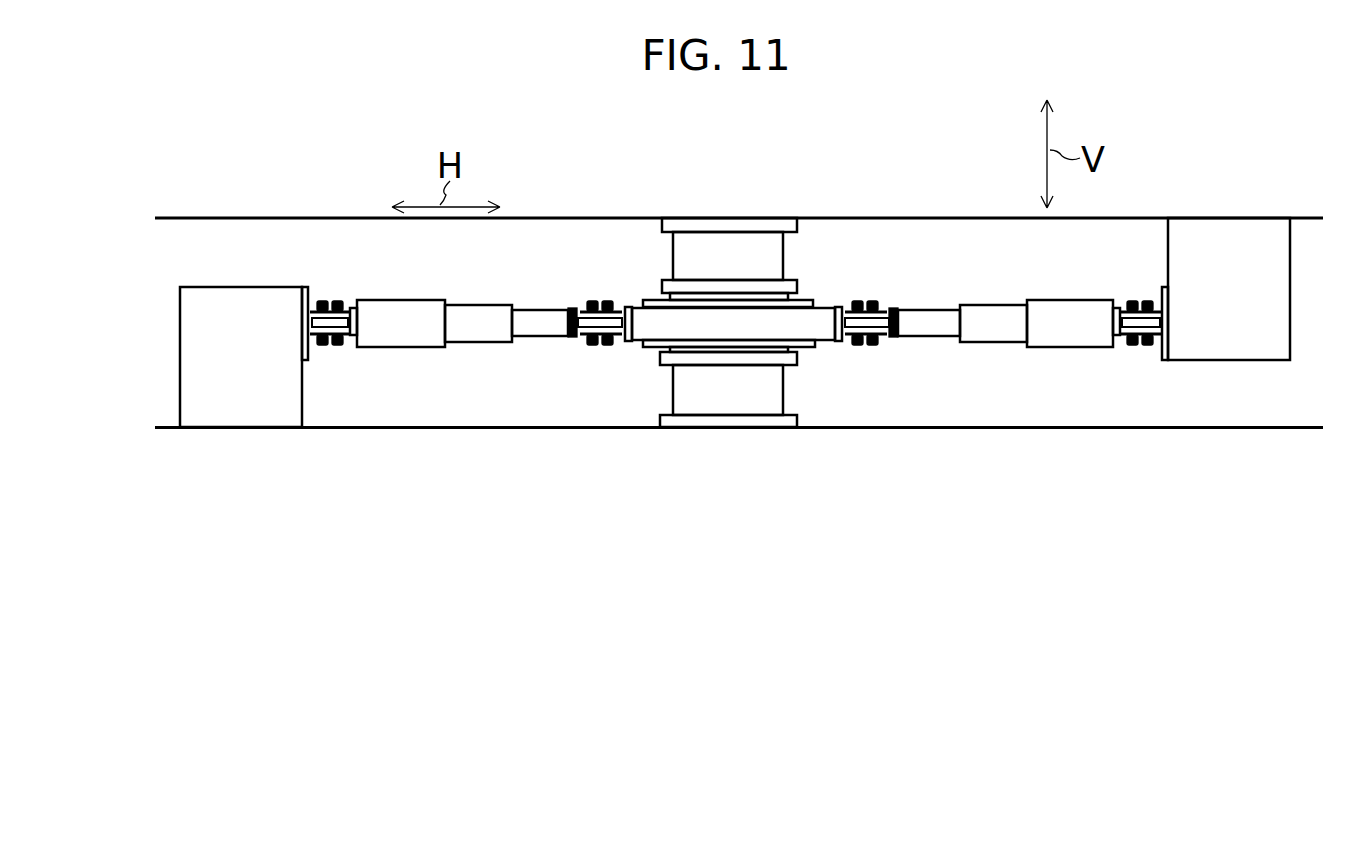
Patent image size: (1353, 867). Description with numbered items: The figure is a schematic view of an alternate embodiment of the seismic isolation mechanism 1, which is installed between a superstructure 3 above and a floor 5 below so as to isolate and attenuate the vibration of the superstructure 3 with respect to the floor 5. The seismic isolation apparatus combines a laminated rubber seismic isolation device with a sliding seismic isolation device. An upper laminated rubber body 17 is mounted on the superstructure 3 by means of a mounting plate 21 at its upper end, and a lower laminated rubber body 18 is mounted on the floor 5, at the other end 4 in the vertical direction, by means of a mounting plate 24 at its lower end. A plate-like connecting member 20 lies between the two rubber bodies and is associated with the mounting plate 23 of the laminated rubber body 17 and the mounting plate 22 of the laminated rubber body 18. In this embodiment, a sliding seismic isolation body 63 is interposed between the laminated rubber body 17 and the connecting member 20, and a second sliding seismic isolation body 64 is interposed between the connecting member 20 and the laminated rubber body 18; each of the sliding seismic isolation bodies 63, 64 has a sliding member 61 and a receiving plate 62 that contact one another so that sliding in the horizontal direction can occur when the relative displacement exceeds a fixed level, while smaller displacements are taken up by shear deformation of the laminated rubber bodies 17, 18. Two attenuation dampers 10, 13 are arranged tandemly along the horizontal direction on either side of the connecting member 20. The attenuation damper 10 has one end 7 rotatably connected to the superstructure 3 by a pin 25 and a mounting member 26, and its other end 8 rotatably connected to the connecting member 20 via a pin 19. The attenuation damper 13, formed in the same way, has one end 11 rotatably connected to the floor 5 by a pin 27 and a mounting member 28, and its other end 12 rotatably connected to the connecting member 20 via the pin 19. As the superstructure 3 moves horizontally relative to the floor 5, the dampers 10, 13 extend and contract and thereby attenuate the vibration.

The seismic isolation mechanism 1 is at (553, 206).
The superstructure 3 is at (550, 219).
The other end in the vertical direction 4 is at (1010, 498).
The floor 5 is at (457, 426).
The one end of attenuation damper 10 7 is at (1135, 302).
The other end of attenuation damper 10 8 is at (883, 337).
The attenuation damper 10 is at (1022, 294).
The one end of attenuation damper 13 11 is at (330, 300).
The other end of attenuation damper 13 12 is at (605, 345).
The attenuation damper 13 is at (438, 290).
The laminated rubber body 17 is at (750, 248).
The laminated rubber body 18 is at (708, 393).
The pin 19 is at (600, 347).
The connecting member 20 is at (797, 325).
The mounting plate 21 is at (738, 225).
The mounting plate 22 is at (673, 360).
The mounting plate 23 is at (787, 287).
The mounting plate 24 is at (740, 422).
The pin 25 is at (1133, 345).
The mounting member 26 is at (1230, 257).
The pin 27 is at (340, 347).
The mounting member 28 is at (242, 387).
The sliding member 61 is at (695, 297).
The receiving plate 62 is at (800, 300).
The sliding seismic isolation body 63 is at (656, 284).
The sliding seismic isolation body 64 is at (650, 362).